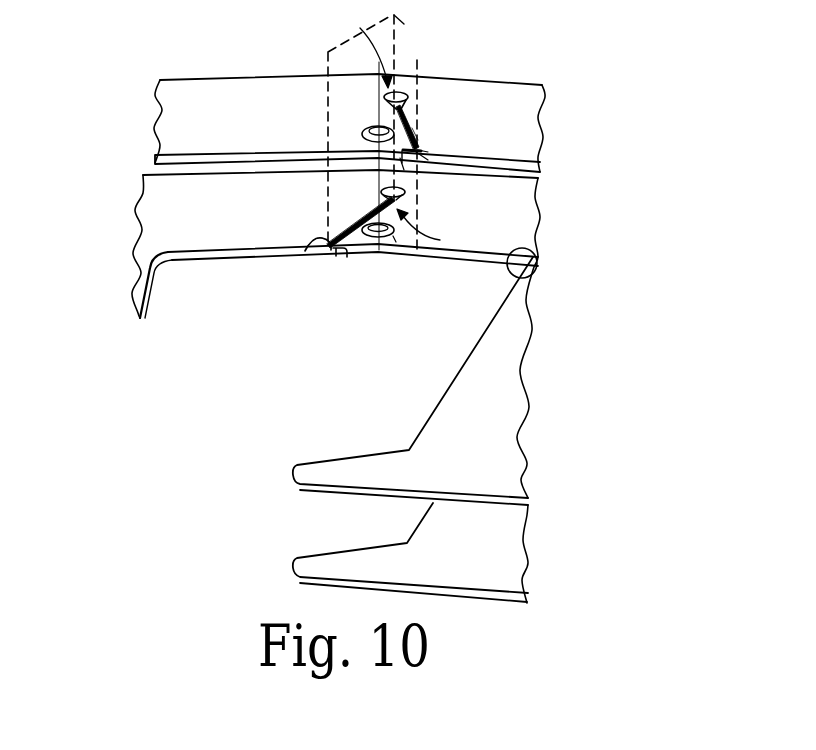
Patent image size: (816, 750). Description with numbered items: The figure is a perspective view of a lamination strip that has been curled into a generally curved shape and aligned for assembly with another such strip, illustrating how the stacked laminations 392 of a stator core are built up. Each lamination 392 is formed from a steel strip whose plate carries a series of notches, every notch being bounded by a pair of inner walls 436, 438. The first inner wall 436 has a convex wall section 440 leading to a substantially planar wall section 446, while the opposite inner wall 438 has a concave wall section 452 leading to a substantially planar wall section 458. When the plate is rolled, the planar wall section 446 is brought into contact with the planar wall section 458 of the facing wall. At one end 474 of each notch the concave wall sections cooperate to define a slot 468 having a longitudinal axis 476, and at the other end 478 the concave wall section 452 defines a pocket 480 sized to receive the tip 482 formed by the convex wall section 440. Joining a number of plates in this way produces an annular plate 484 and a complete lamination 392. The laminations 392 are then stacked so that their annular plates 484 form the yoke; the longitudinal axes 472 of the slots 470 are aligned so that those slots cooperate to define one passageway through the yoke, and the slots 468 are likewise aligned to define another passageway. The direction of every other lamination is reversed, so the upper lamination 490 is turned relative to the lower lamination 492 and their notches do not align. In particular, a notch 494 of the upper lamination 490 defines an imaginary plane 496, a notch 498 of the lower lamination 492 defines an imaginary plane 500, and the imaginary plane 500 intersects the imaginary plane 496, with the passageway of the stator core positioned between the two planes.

The lamination 392 is at (526, 94).
The inner wall 436 is at (420, 120).
The inner wall 438 is at (424, 138).
The convex wall section 440 is at (336, 258).
The substantially planar wall section 446 is at (420, 127).
The concave wall section 452 is at (318, 252).
The substantially planar wall section 458 is at (426, 143).
The slot 468 is at (400, 129).
The slot 470 is at (365, 127).
The longitudinal axis 472 is at (394, 242).
The end of notch 474 is at (405, 72).
The longitudinal axis 476 is at (405, 23).
The other end of notch 478 is at (403, 166).
The pocket 480 is at (420, 156).
The tip 482 is at (383, 194).
The annular plate 484 is at (544, 140).
The upper lamination 490 is at (188, 86).
The lower lamination 492 is at (152, 196).
The notch 494 is at (419, 103).
The imaginary plane 496 is at (420, 63).
The notch 498 is at (327, 243).
The imaginary plane 500 is at (326, 134).